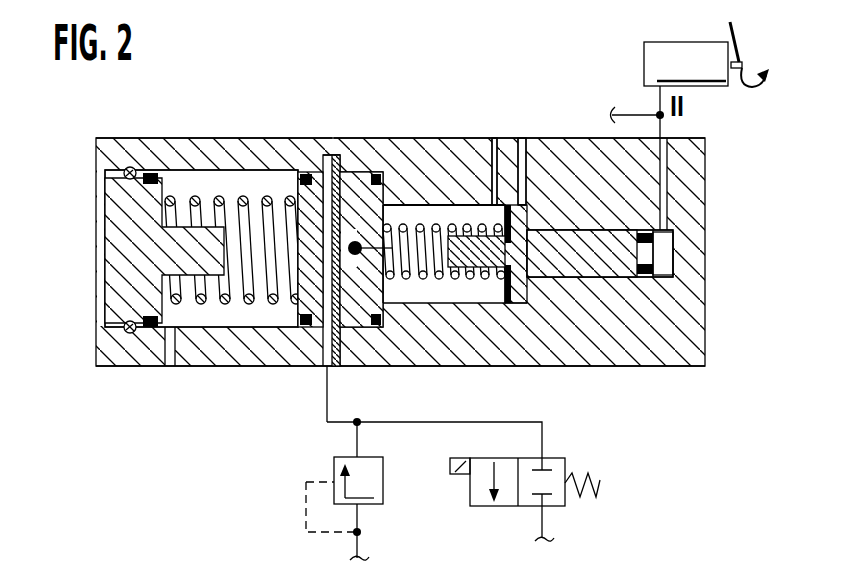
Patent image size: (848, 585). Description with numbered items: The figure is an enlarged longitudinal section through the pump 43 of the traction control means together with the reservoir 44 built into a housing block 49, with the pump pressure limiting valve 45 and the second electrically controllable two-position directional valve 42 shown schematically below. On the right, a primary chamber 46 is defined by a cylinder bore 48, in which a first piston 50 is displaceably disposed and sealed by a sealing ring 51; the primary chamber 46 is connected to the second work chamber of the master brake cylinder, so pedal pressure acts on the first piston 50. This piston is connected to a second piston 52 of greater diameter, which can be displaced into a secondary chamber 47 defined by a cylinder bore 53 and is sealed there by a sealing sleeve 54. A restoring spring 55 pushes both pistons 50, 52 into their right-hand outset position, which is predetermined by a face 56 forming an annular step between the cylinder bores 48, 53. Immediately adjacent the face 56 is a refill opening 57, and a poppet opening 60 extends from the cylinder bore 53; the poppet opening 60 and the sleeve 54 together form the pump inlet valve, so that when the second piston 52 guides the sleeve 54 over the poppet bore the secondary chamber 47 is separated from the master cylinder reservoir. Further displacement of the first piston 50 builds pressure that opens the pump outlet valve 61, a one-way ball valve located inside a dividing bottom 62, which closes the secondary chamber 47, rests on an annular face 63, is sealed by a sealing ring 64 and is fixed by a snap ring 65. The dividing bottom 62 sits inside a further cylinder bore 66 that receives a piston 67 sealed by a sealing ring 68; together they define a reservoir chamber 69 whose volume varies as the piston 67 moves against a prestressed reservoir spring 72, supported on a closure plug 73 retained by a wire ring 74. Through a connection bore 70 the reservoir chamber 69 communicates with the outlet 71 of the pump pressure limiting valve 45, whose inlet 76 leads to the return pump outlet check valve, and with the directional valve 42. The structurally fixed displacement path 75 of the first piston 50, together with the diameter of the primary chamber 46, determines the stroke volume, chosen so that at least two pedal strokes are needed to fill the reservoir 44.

The second electrically controllable 2/2-way valve 42 is at (557, 468).
The pump 43 is at (704, 138).
The reservoir 44 is at (332, 137).
The pump pressure limiting valve 45 is at (370, 481).
The primary chamber 46 is at (665, 248).
The secondary chamber 47 is at (460, 268).
The cylinder bore 48 is at (702, 305).
The housing block 49 is at (682, 172).
The first piston 50 is at (600, 258).
The sealing ring 51 is at (647, 280).
The second piston 52 is at (506, 303).
The cylinder bore 53 is at (412, 297).
The sealing sleeve 54 is at (509, 310).
The restoring spring 55 is at (440, 215).
The face 56 is at (526, 210).
The refill opening 57 is at (525, 178).
The poppet opening 60 is at (491, 168).
The pump outlet valve 61 is at (375, 258).
The dividing bottom 62 is at (362, 358).
The face 63 is at (356, 172).
The sealing ring 64 is at (380, 352).
The snap ring 65 is at (335, 157).
The cylinder bore 66 is at (220, 182).
The piston 67 is at (323, 279).
The sealing ring 68 is at (304, 340).
The reservoir chamber 69 is at (333, 233).
The connection bore 70 is at (314, 335).
The outlet 71 is at (360, 457).
The reservoir spring 72 is at (270, 198).
The closure plug 73 is at (142, 249).
The wire ring 74 is at (128, 332).
The displacement path 75 is at (448, 120).
The inlet 76 is at (362, 507).